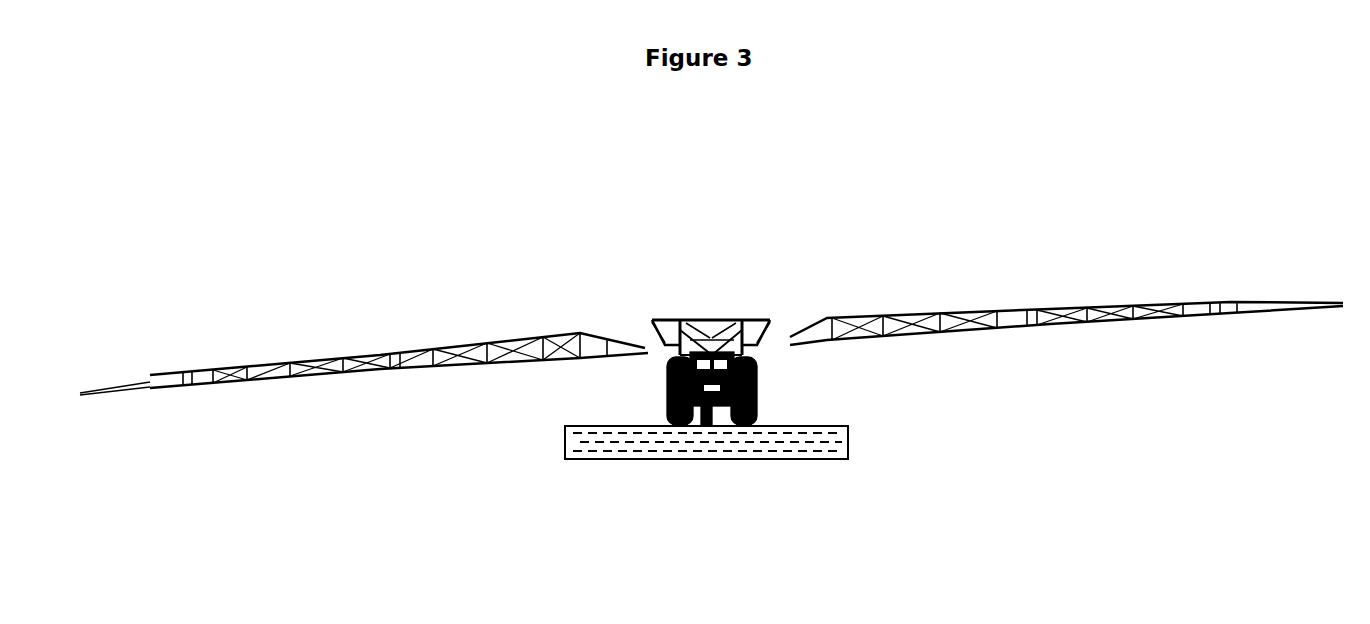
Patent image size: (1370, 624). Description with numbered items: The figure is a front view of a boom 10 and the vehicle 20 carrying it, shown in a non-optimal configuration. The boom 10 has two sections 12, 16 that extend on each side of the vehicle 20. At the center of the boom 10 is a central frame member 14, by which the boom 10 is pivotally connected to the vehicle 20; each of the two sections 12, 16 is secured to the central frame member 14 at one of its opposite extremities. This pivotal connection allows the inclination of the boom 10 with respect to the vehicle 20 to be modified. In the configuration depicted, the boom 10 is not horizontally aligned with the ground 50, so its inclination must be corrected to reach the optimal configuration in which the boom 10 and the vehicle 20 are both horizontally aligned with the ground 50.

The boom 10 is at (711, 317).
The section 12 is at (267, 364).
The central frame member 14 is at (761, 315).
The section 16 is at (1131, 307).
The vehicle 20 is at (768, 376).
The ground 50 is at (547, 440).